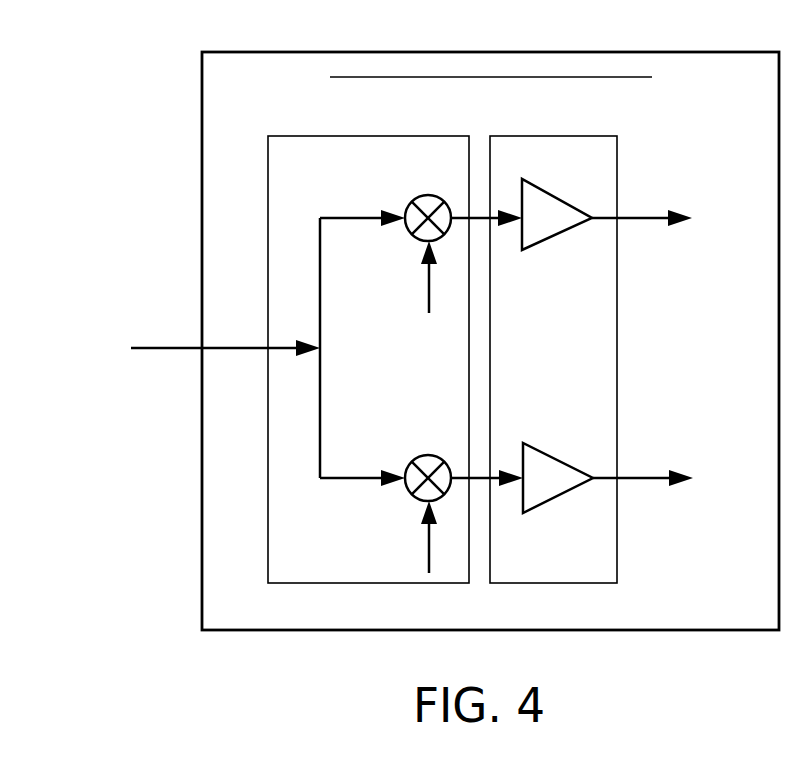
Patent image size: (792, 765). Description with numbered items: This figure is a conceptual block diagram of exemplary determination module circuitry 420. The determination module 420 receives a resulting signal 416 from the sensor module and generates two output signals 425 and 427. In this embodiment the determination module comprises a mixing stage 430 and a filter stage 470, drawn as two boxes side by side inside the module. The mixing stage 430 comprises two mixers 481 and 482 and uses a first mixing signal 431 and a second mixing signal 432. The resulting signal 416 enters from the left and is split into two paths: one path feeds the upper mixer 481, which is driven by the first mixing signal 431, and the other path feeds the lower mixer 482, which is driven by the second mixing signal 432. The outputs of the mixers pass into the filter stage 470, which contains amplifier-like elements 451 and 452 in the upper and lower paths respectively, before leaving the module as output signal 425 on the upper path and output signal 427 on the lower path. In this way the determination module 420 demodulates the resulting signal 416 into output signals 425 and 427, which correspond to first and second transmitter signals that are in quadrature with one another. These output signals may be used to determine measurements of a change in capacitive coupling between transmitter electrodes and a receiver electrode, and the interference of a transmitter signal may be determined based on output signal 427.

The determination module circuitry 420 is at (528, 52).
The mixing stage 430 is at (408, 136).
The filter stage 470 is at (552, 136).
The resulting signal 416 is at (150, 348).
The mixer 481 is at (423, 195).
The mixer 482 is at (423, 455).
The first mixing signal 431 is at (428, 292).
The second mixing signal 432 is at (428, 552).
The first amplifier 451 is at (553, 195).
The second amplifier 452 is at (556, 458).
The output signal 425 is at (678, 210).
The output signal 427 is at (681, 476).